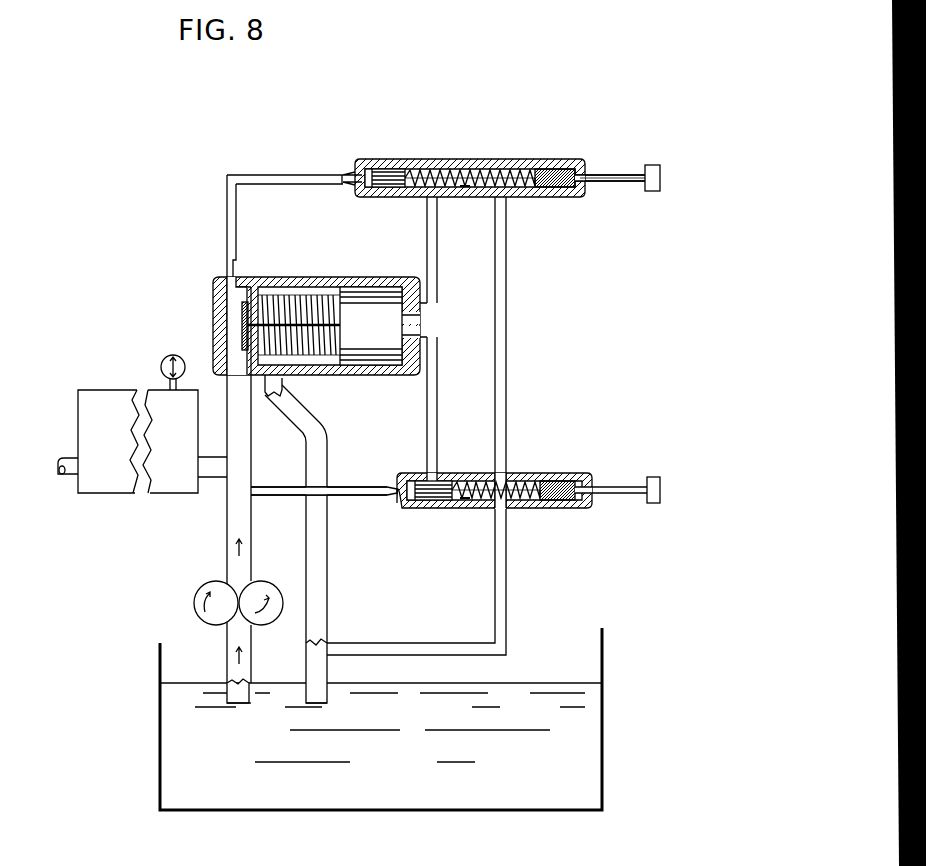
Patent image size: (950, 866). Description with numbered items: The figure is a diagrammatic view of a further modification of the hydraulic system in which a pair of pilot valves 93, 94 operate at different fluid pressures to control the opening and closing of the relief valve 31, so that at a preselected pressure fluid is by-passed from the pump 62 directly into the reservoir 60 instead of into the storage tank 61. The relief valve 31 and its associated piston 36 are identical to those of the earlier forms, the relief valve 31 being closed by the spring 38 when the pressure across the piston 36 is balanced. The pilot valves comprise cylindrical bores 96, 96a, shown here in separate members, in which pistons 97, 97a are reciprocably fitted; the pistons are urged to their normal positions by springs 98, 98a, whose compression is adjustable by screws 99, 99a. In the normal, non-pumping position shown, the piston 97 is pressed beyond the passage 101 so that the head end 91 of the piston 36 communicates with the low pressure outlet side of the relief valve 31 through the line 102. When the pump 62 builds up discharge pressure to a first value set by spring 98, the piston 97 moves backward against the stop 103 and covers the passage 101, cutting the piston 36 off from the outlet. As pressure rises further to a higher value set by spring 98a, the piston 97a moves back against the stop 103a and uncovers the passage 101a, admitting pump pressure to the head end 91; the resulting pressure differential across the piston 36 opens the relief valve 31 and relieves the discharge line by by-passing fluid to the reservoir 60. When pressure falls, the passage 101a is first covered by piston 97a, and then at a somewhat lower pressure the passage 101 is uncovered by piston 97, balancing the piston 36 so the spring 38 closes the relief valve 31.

The relief valve 31 is at (245, 325).
The piston 36 is at (366, 297).
The spring 38 is at (320, 372).
The reservoir 60 is at (580, 742).
The storage tank 61 is at (108, 485).
The pump 62 is at (270, 580).
The head end 91 is at (407, 355).
The pilot valve 93 is at (522, 160).
The pilot valve 94 is at (560, 475).
The cylindrical bore 96 is at (465, 185).
The cylindrical bore 96a is at (462, 490).
The piston 97 is at (388, 178).
The piston 97a is at (410, 498).
The spring 98 is at (498, 175).
The spring 98a is at (520, 488).
The screw 99 is at (562, 178).
The screw 99a is at (565, 505).
The passage 101 is at (432, 228).
The passage 101a is at (432, 422).
The line 102 is at (500, 305).
The stop 103 is at (448, 172).
The stop 103a is at (482, 500).